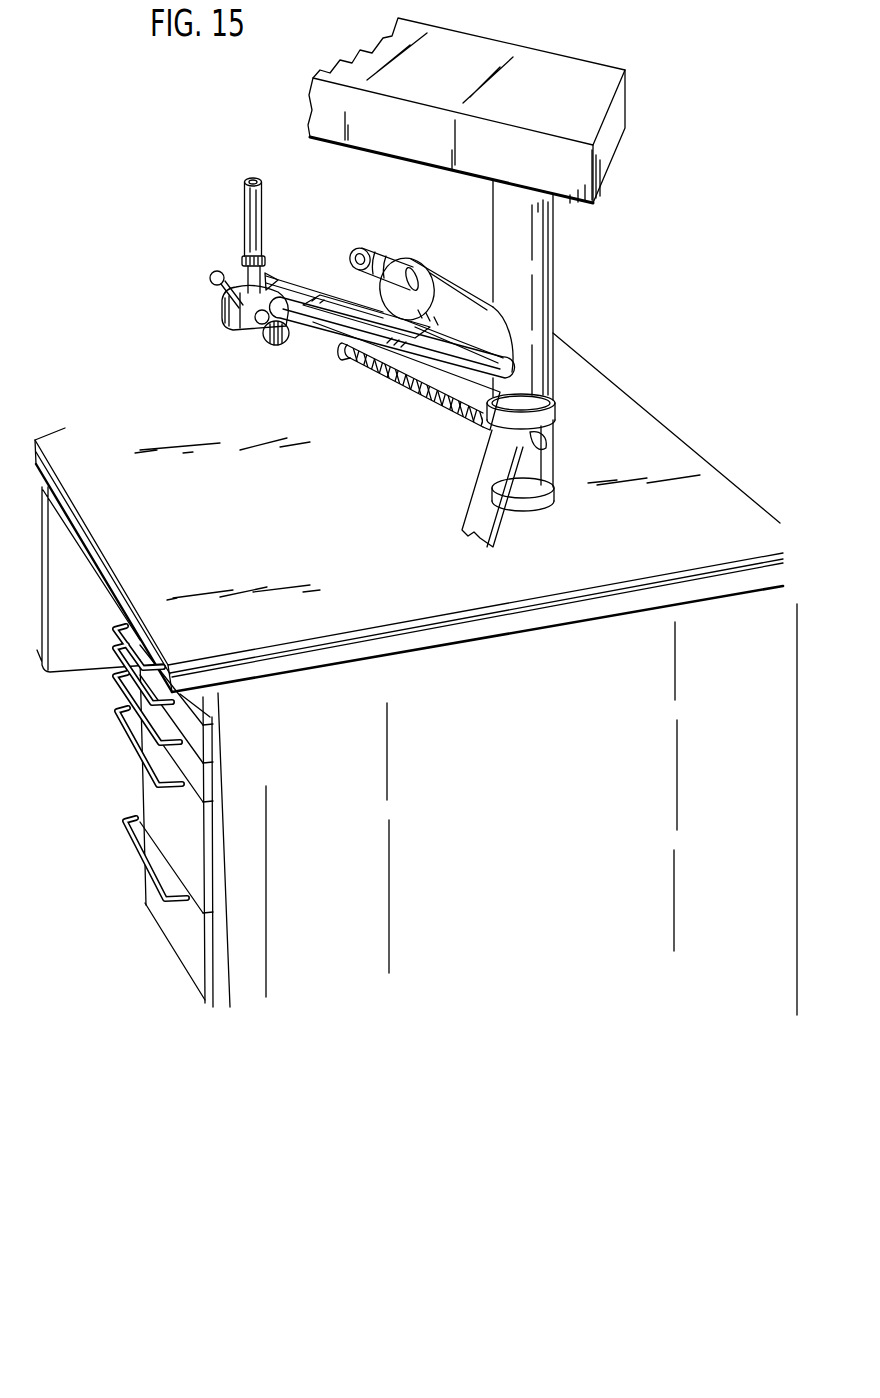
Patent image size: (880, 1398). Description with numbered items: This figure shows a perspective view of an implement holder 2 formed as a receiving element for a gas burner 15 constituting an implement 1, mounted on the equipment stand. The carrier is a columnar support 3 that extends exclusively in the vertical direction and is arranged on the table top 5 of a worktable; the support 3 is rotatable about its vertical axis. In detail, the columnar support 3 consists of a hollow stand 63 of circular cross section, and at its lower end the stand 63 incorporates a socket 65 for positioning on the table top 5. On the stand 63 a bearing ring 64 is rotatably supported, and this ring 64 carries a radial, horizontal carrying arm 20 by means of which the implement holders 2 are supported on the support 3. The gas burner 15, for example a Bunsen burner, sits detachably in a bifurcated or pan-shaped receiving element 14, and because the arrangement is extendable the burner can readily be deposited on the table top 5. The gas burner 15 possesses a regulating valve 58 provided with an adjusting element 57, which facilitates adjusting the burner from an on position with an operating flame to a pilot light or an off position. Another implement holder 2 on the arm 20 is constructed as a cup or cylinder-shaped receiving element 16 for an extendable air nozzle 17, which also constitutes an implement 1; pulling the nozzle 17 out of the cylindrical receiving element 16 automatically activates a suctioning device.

The implement 1 is at (308, 235).
The implement holder 2 is at (590, 58).
The columnar support 3 is at (555, 259).
The table top 5 is at (345, 534).
The bifurcated receiving element 14 is at (263, 340).
The gas burner 15 is at (258, 222).
The cylinder-shaped receiving element 16 is at (468, 297).
The air nozzle 17 is at (383, 260).
The carrying arm 20 is at (440, 366).
The adjusting element 57 is at (211, 274).
The regulating valve 58 is at (240, 330).
The hollow stand 63 is at (535, 372).
The bearing ring 64 is at (537, 440).
The socket 65 is at (548, 503).